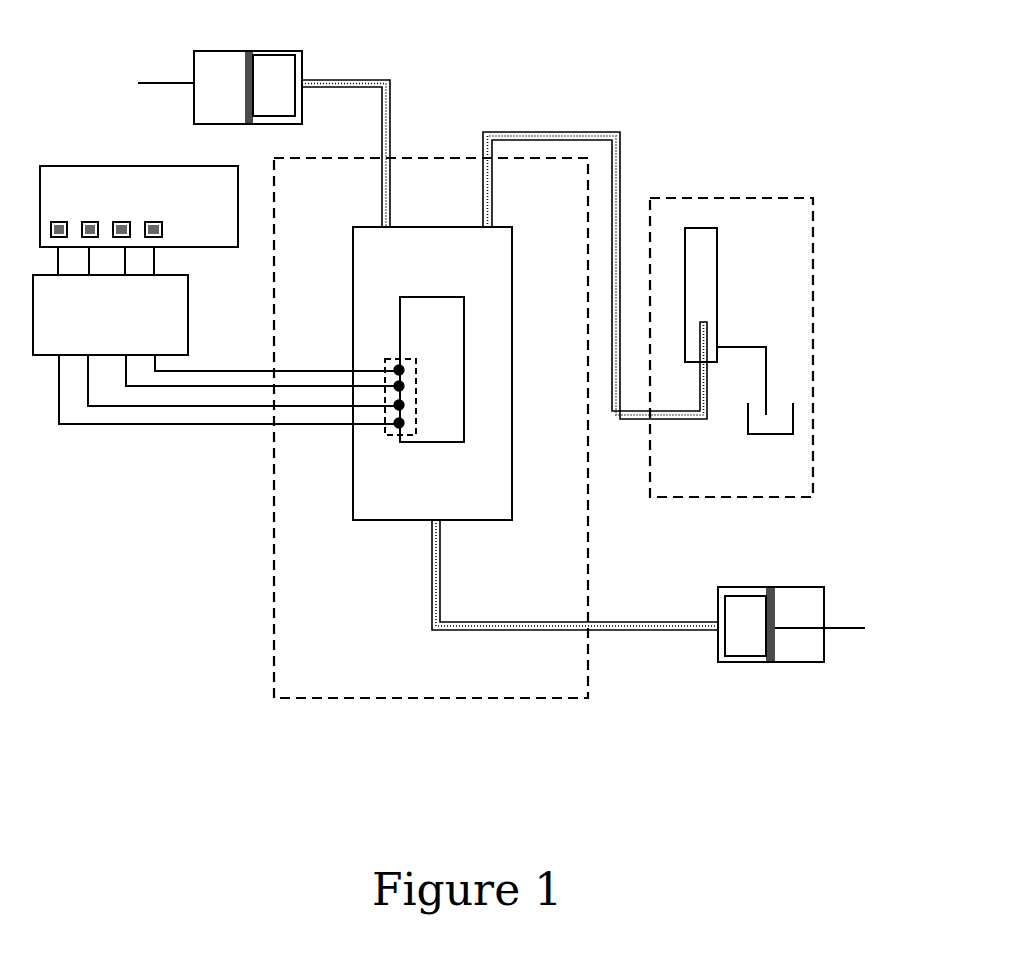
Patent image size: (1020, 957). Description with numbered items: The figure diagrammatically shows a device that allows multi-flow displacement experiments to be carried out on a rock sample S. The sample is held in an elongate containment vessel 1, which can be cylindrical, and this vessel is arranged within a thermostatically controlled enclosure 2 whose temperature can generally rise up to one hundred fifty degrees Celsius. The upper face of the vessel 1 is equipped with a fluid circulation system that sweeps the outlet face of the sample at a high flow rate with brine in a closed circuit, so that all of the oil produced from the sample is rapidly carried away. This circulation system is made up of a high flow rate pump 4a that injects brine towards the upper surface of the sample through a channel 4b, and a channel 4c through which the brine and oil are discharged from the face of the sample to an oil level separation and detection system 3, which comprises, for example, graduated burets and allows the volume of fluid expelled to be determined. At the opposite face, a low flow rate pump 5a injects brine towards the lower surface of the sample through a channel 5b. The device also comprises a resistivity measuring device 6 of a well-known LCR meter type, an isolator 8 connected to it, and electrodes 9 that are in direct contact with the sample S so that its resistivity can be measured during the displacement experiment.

The containment vessel 1 is at (354, 517).
The thermostatically controlled enclosure 2 is at (272, 698).
The oil level separation and detection system 3 is at (813, 217).
The high flow rate pump 4a is at (193, 53).
The channel 4b is at (348, 80).
The channel 4c is at (515, 131).
The low flow rate pump 5a is at (829, 664).
The channel 5b is at (633, 630).
The resistivity measuring device 6 is at (209, 210).
The isolator 8 is at (125, 351).
The electrodes 9 is at (382, 437).